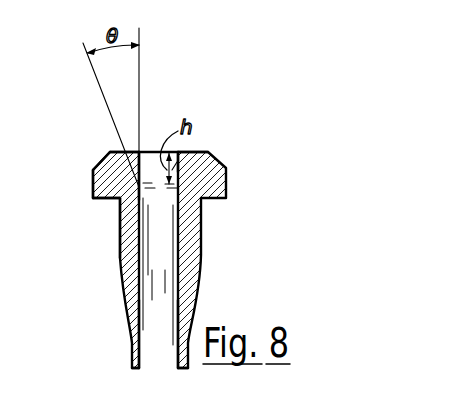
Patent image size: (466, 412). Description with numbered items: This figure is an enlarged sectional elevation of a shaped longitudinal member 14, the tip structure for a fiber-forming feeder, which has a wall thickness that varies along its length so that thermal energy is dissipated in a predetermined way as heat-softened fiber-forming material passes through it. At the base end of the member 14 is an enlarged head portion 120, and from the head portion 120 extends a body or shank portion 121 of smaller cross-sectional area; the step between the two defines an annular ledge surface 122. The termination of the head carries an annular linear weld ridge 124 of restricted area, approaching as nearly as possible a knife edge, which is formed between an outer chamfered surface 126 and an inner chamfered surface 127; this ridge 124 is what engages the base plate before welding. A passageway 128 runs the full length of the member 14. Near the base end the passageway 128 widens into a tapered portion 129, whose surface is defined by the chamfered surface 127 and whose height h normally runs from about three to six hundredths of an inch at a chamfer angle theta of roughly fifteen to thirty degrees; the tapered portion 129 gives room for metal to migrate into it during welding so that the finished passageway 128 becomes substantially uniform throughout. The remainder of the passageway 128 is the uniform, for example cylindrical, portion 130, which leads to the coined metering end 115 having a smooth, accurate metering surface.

The shaped longitudinal member 14 is at (203, 257).
The metering end 115 is at (133, 368).
The head portion 120 is at (90, 182).
The body or shank portion 121 is at (121, 238).
The annular ledge surface 122 is at (102, 199).
The annular linear weld ridge 124 is at (117, 153).
The chamfered surface 126 is at (102, 156).
The chamfered surface 127 is at (186, 158).
The passageway 128 is at (155, 345).
The tapered portion 129 is at (157, 172).
The uniform portion 130 is at (163, 257).